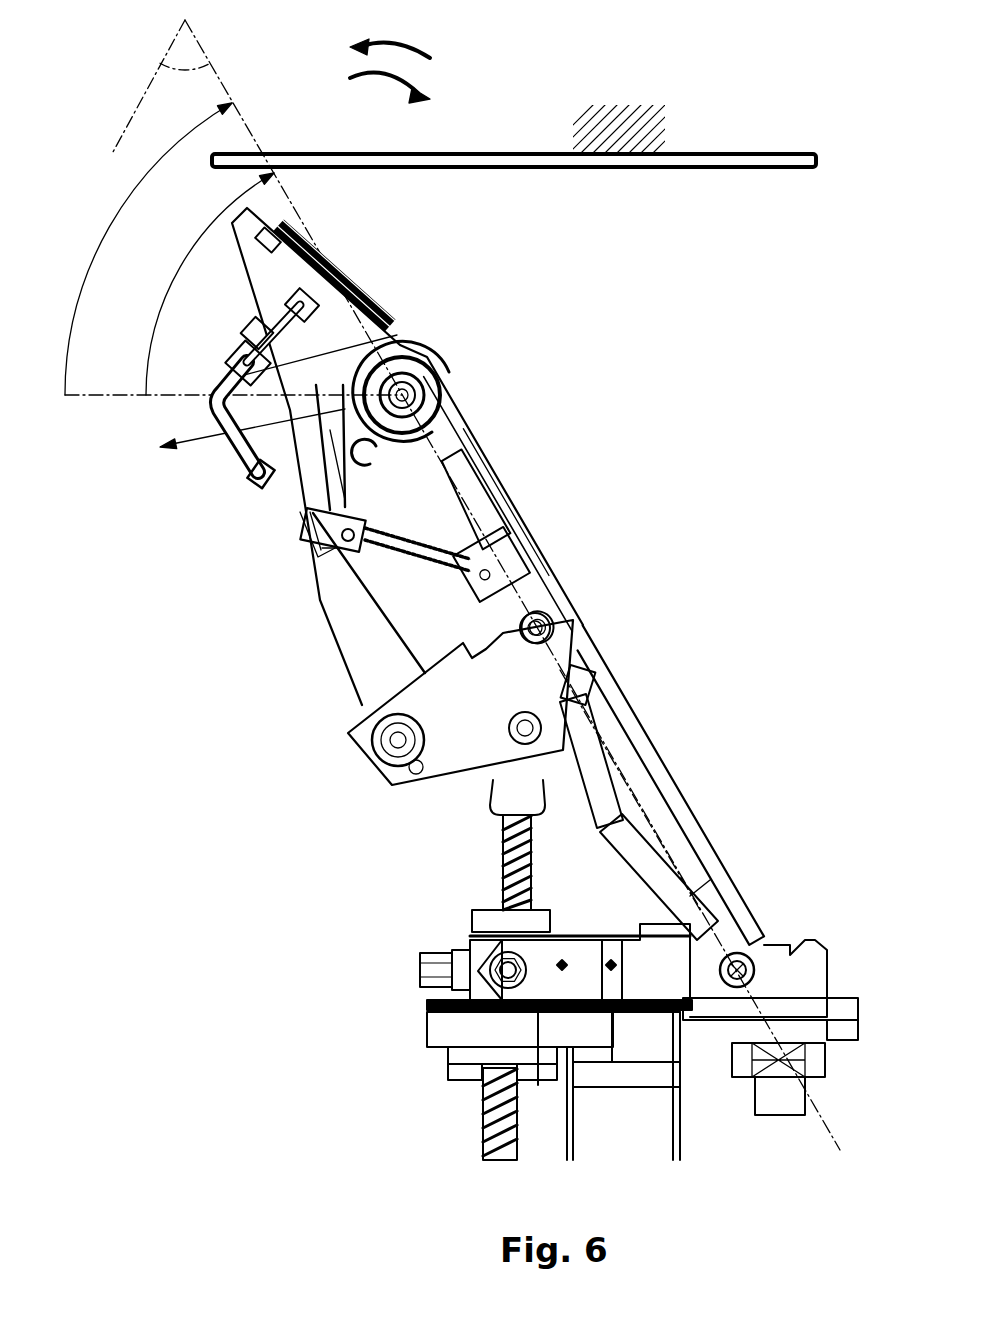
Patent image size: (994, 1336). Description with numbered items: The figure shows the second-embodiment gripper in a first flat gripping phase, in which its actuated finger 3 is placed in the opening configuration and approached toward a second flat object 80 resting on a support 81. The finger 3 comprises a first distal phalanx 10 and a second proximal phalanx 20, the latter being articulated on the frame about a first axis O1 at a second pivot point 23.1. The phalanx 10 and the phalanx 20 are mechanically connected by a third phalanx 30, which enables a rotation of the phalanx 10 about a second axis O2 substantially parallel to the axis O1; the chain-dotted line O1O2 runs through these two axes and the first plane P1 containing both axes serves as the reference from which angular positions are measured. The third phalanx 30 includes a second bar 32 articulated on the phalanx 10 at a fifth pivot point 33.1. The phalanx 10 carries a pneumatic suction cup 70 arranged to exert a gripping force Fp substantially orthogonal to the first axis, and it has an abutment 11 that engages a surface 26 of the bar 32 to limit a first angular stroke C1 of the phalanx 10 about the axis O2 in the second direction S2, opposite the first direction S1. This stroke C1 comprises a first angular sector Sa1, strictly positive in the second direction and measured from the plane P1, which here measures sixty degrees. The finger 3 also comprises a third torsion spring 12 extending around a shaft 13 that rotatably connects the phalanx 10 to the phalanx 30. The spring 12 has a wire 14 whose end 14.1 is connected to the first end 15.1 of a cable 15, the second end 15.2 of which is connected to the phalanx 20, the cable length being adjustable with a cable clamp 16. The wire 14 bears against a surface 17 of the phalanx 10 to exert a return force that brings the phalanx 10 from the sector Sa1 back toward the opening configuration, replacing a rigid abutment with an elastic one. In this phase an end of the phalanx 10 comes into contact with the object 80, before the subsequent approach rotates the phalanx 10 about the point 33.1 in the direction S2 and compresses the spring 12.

The first plane P1 is at (178, 33).
The first angular stroke C1 is at (112, 222).
The first angular sector Sa1 is at (172, 274).
The first direction S1 is at (386, 80).
The second direction S2 is at (405, 45).
The second flat object 80 is at (512, 168).
The support 81 is at (665, 128).
The third phalanx 30 is at (571, 409).
The surface 26 is at (480, 458).
The second bar 32 is at (505, 505).
The second end of the cable 15.2 is at (458, 550).
The pneumatic suction cup 70 is at (368, 300).
The first distal phalanx 10 is at (440, 281).
The fifth pivot point 33.1 is at (430, 366).
The second axis O2 is at (430, 382).
The third torsion spring 12 is at (448, 397).
The gripping force Fp is at (165, 440).
The shaft 13 is at (250, 468).
The surface 17 is at (323, 497).
The abutment 11 is at (370, 483).
The wire 14 is at (328, 567).
The end of the wire 14.1 is at (340, 547).
The cable 15 is at (377, 557).
The first end of the cable 15.1 is at (327, 577).
The cable clamp 16 is at (407, 567).
The actuated finger 3 is at (368, 827).
The second proximal phalanx 20 is at (723, 759).
The axis line O1-O2 O1O2 is at (665, 853).
The first axis O1 is at (743, 956).
The second pivot point 23.1 is at (757, 970).